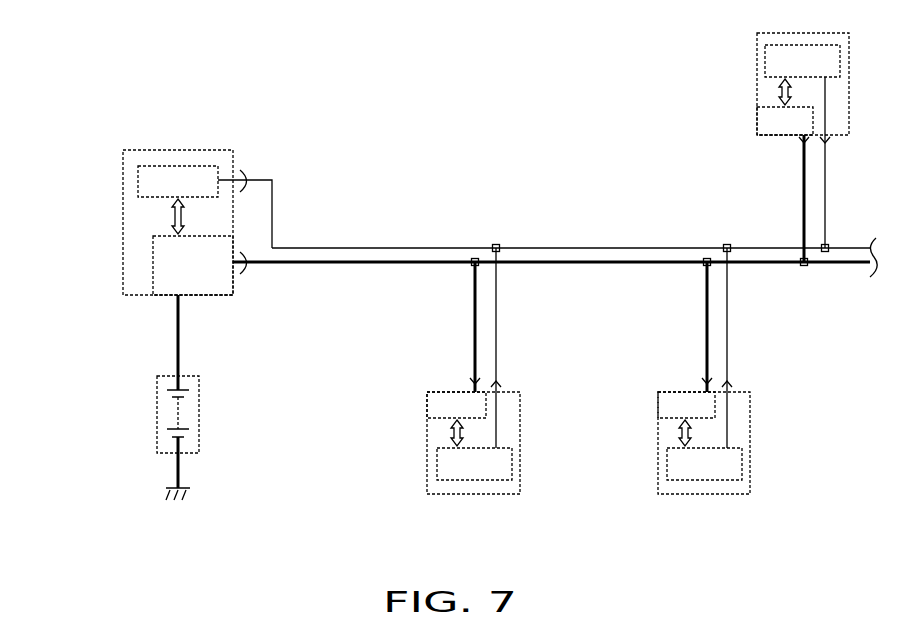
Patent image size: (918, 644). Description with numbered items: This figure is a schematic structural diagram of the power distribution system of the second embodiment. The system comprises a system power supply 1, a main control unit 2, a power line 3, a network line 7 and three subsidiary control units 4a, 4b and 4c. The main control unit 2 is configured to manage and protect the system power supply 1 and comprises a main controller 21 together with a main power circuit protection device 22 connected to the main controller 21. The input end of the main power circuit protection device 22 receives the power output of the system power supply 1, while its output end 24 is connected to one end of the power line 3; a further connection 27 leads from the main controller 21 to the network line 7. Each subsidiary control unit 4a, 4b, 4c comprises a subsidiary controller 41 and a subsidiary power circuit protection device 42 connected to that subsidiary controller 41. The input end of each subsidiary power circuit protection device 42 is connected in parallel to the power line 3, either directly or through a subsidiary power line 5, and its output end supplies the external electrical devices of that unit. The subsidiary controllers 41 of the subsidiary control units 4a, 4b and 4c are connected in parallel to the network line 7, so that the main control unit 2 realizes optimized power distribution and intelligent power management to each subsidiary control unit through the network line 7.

The system power supply 1 is at (148, 428).
The main control unit 2 is at (120, 182).
The main controller 21 is at (172, 178).
The main power circuit protection device 22 is at (162, 262).
The output end 24 is at (250, 270).
The communication connector 27 is at (249, 170).
The power line 3 is at (607, 263).
The subsidiary power line 5 is at (465, 325).
The network line 7 is at (585, 247).
The subsidiary control unit 4a is at (469, 443).
The subsidiary control unit 4b is at (754, 442).
The subsidiary control unit 4c is at (748, 82).
The subsidiary controller 41 is at (445, 467).
The subsidiary power circuit protection device 42 is at (440, 408).